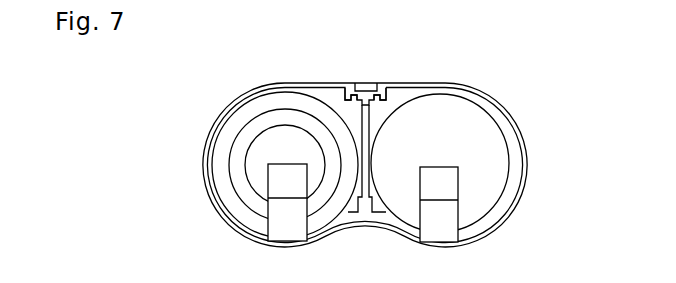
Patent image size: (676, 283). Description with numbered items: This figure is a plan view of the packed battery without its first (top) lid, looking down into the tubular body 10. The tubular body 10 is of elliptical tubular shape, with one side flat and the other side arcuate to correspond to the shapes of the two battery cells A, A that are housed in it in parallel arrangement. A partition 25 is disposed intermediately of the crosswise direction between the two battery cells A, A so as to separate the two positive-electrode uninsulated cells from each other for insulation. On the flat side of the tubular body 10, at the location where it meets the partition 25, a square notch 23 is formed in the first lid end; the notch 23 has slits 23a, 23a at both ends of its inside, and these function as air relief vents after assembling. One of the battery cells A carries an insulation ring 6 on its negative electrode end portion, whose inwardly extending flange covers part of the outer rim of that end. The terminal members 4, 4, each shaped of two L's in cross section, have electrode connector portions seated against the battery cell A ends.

The terminal member 4 is at (280, 231).
The insulation ring 6 is at (232, 132).
The tubular body 10 is at (527, 160).
The square notch 23 is at (368, 86).
The slits 23a is at (354, 90).
The partition 25 is at (375, 112).
The battery cell A is at (247, 159).